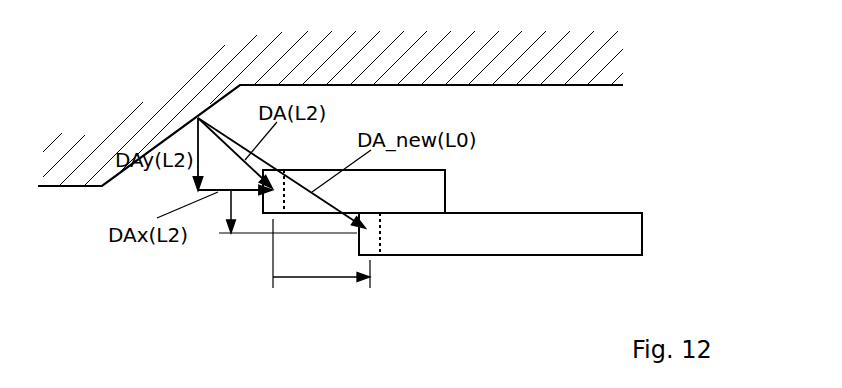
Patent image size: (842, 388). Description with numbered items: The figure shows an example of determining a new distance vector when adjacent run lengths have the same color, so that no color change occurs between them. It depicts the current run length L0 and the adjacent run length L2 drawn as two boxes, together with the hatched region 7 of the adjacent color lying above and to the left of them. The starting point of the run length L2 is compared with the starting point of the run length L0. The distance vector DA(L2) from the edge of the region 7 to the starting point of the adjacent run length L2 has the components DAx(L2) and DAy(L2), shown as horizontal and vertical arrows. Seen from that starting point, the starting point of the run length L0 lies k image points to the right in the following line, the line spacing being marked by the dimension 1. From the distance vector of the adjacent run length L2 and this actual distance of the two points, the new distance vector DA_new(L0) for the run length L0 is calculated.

The region of the adjacent color 7 is at (517, 68).
The unit displacement 1 is at (288, 211).
The adjacent run length L2 is at (354, 191).
The current run length L0 is at (500, 234).
The number of image points k is at (321, 262).